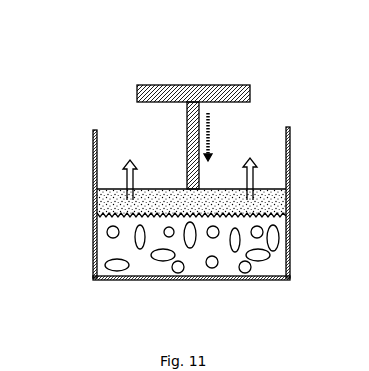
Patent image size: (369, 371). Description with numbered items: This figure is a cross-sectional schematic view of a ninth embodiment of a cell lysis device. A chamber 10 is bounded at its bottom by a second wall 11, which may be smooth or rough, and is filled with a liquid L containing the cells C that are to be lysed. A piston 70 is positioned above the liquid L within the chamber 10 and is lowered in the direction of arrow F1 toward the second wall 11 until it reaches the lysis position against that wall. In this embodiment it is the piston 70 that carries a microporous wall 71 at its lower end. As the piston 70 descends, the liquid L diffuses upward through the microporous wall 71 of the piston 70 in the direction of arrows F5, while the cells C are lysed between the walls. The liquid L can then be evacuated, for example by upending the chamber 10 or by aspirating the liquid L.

The chamber 10 is at (290, 162).
The second wall 11 is at (133, 281).
The piston 70 is at (192, 84).
The microporous wall 71 is at (96, 209).
The liquid L is at (287, 250).
The cells C is at (240, 268).
The arrow F1 is at (212, 132).
The arrows F5 is at (136, 172).